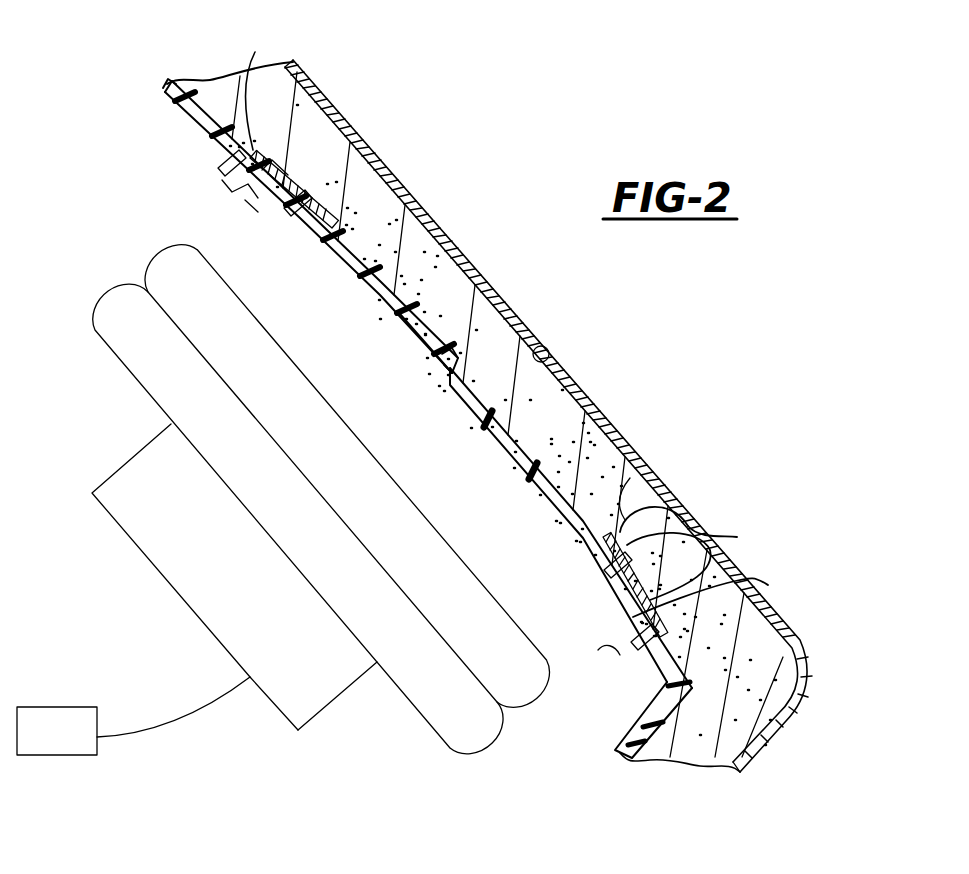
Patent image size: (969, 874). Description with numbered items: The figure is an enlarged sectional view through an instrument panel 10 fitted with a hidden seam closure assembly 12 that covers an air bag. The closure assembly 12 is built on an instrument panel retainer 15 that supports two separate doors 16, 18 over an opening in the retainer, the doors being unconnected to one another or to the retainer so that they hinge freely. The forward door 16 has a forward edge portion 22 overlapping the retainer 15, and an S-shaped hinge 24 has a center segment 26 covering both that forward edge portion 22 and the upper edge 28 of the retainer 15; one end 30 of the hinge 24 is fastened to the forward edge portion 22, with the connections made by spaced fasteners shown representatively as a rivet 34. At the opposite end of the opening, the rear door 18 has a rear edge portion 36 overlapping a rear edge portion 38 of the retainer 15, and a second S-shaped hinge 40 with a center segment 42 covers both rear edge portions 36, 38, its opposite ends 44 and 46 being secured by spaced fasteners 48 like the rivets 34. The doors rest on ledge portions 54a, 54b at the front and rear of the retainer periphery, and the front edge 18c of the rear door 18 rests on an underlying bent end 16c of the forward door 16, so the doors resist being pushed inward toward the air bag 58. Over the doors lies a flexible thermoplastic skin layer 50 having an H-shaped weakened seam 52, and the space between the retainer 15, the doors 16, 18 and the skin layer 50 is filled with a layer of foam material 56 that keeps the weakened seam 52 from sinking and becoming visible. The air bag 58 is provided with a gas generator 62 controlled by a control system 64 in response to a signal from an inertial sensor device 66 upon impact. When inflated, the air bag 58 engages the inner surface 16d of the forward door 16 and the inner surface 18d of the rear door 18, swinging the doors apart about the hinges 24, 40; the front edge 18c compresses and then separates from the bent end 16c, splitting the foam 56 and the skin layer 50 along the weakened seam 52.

The instrument panel 10 is at (348, 82).
The hidden seam closure assembly 12 is at (526, 308).
The instrument panel retainer 15 is at (175, 124).
The door 16 is at (358, 273).
The bent end 16c is at (460, 405).
The inner surface 16d is at (392, 320).
The door 18 is at (520, 470).
The front edge 18c is at (450, 378).
The inner surface 18d is at (476, 412).
The forward edge portion 22 is at (333, 130).
The S-shaped hinge 24 is at (244, 216).
The center segment 26 is at (272, 210).
The upper edge 28 is at (222, 185).
The end 30 is at (328, 203).
The rivet 34 is at (218, 165).
The rear edge portion 36 is at (722, 535).
The rear edge portion 38 is at (603, 630).
The S-shaped hinge 40 is at (590, 618).
The center segment 42 is at (607, 597).
The end 44 is at (660, 505).
The end 46 is at (655, 662).
The fasteners 48 is at (700, 528).
The skin layer 50 is at (605, 422).
The weakened seam 52 is at (549, 356).
The ledge portion 54a is at (256, 86).
The ledge portion 54b is at (724, 595).
The layer of foam material 56 is at (630, 478).
The air bag 58 is at (93, 328).
The gas generator 62 is at (132, 525).
The control system 64 is at (322, 718).
The inertial sensor device 66 is at (80, 707).